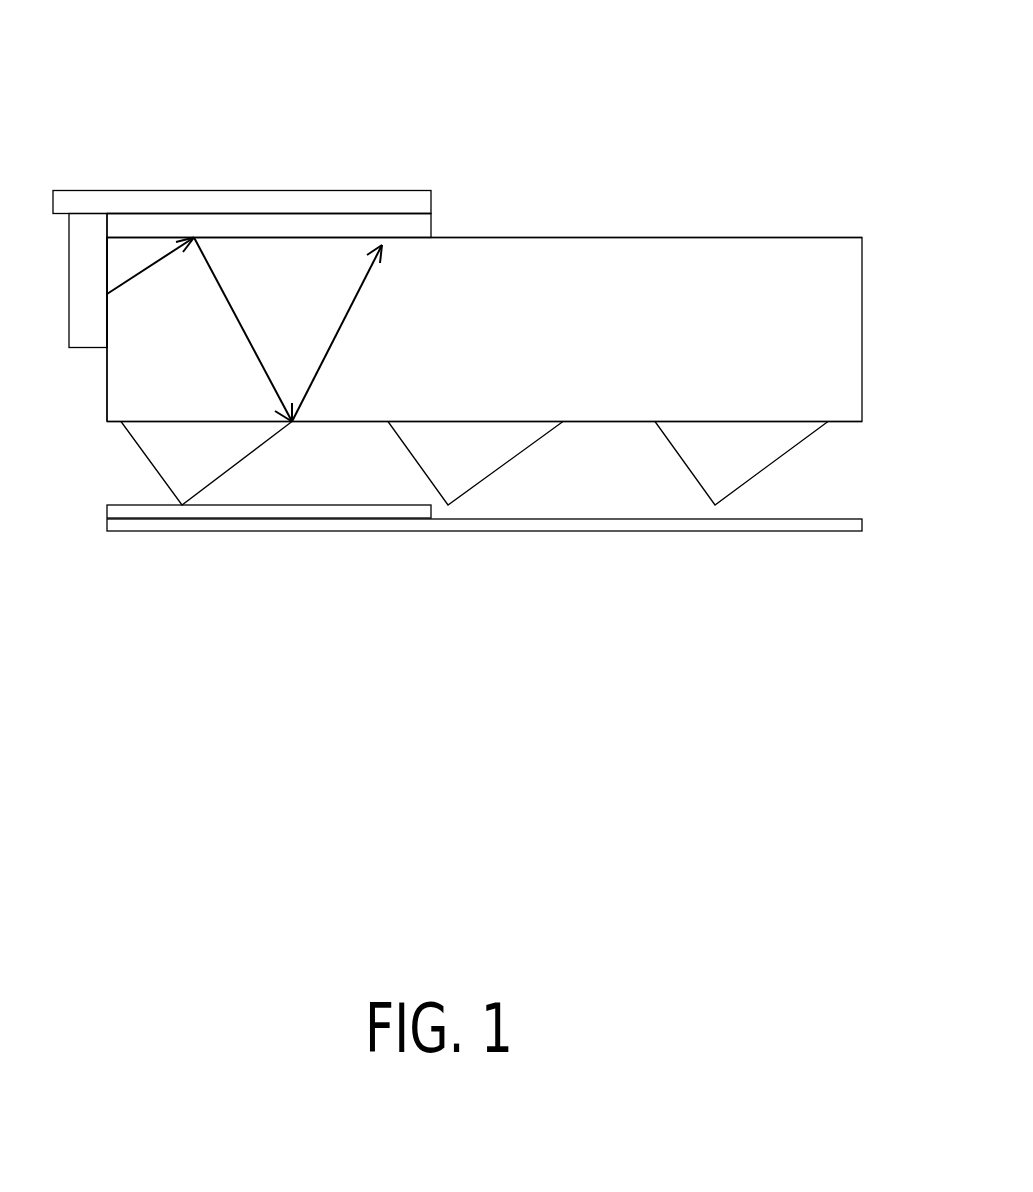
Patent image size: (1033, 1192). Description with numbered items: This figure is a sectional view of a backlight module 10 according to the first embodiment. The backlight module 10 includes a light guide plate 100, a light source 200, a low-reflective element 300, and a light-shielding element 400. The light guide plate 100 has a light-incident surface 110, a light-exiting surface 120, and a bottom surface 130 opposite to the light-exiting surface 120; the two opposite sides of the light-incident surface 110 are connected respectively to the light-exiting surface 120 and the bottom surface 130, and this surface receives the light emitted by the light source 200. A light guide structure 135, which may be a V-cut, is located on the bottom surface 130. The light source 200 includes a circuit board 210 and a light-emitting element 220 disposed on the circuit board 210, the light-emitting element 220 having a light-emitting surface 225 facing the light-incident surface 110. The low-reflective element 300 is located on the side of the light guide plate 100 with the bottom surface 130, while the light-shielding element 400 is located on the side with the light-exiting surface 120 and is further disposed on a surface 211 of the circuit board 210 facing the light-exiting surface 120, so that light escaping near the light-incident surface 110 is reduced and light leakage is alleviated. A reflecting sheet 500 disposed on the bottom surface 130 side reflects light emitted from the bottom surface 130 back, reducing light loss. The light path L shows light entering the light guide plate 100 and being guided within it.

The backlight module 10 is at (54, 36).
The light guide plate 100 is at (838, 321).
The light-incident surface 110 is at (106, 382).
The light-exiting surface 120 is at (752, 237).
The bottom surface 130 is at (845, 423).
The light guide structure 135 is at (750, 452).
The light source 200 is at (221, 225).
The circuit board 210 is at (88, 198).
The surface of the circuit board 211 is at (243, 213).
The light-emitting element 220 is at (68, 247).
The light-emitting surface 225 is at (108, 267).
The low-reflective element 300 is at (106, 510).
The light-shielding element 400 is at (283, 230).
The reflecting sheet 500 is at (106, 525).
The light path L is at (320, 363).